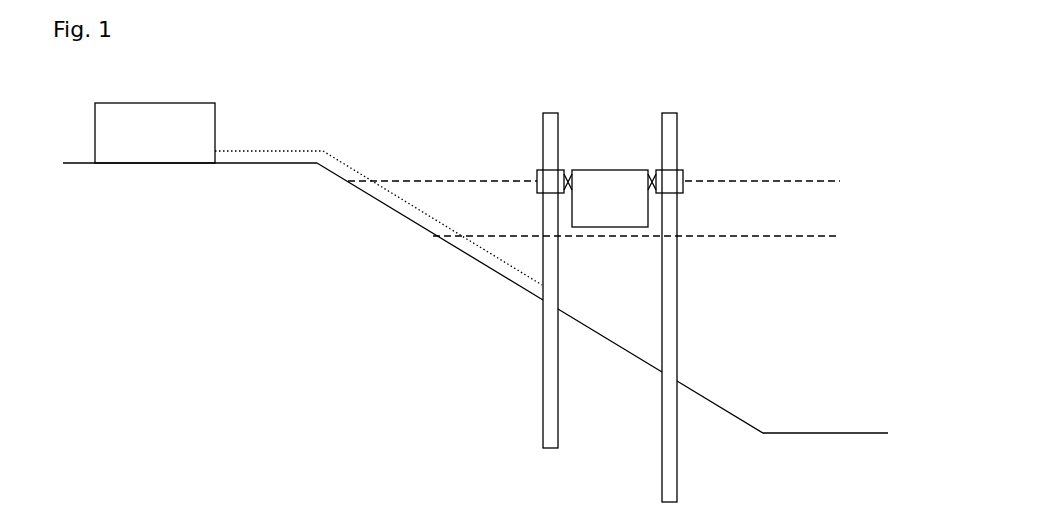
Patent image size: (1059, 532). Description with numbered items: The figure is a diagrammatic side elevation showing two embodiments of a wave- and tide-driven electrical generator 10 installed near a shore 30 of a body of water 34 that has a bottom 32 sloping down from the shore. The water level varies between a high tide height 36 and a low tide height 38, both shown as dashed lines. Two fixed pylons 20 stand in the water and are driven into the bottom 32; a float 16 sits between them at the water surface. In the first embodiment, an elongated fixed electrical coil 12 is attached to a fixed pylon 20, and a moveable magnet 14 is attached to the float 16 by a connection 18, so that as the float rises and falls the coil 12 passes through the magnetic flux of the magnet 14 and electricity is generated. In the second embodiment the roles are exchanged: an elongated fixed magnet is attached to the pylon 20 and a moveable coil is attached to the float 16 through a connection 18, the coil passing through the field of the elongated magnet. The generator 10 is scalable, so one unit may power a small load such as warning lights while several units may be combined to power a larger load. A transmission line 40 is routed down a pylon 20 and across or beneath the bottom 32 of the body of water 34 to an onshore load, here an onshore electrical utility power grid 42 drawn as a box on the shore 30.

The electrical generator 10 is at (619, 268).
The elongated fixed electrical coil 12 is at (555, 153).
The moveable magnet 14 is at (552, 190).
The float 16 is at (603, 172).
The connection 18 is at (567, 177).
The fixed pylon 20 is at (553, 113).
The shore 30 is at (248, 167).
The bottom 32 is at (625, 355).
The body of water 34 is at (795, 353).
The high tide height 36 is at (797, 182).
The low tide height 38 is at (803, 240).
The transmission line 40 is at (330, 158).
The onshore electrical utility power grid 42 is at (112, 107).